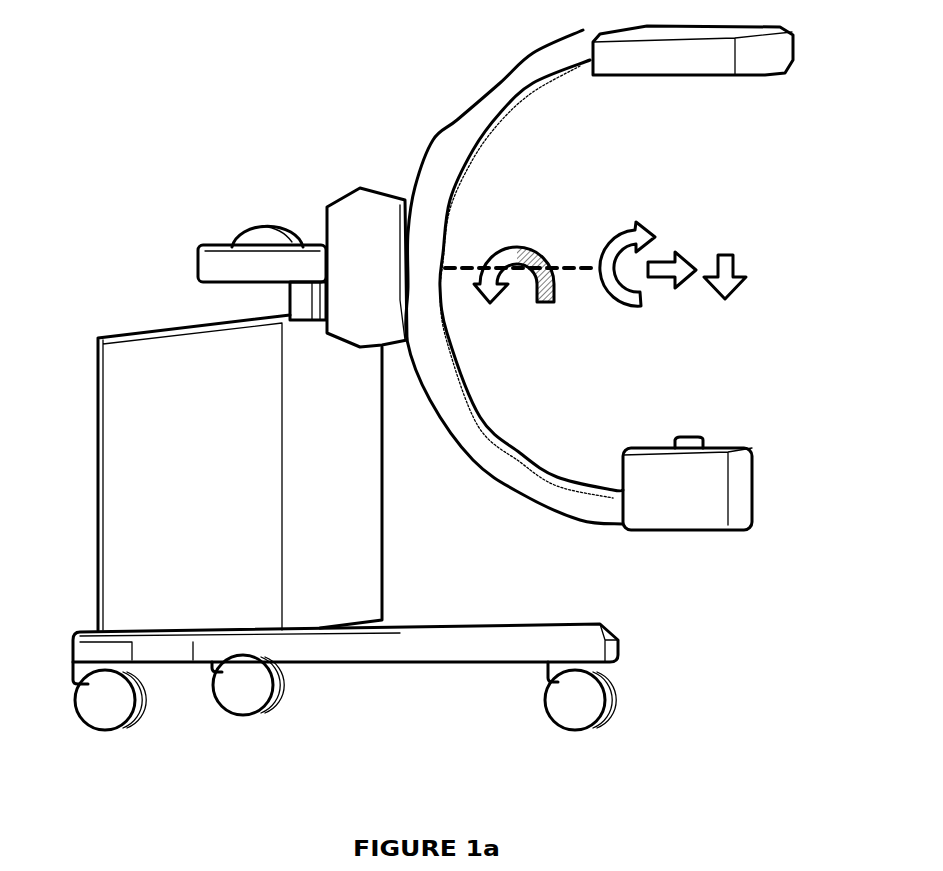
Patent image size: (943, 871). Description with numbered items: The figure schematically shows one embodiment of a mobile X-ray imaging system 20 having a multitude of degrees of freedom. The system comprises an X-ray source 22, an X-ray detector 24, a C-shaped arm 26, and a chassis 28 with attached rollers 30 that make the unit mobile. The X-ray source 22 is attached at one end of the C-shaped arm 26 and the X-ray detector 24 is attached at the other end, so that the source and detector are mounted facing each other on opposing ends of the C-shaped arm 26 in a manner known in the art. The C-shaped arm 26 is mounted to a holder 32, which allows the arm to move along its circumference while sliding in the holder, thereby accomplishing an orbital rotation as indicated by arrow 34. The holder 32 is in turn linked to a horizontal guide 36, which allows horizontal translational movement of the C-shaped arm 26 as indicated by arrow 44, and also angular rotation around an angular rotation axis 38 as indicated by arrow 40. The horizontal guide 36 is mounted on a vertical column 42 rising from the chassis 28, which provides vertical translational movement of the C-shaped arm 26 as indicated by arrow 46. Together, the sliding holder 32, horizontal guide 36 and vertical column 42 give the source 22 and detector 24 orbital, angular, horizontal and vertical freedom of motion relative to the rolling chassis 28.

The mobile X-ray imaging system 20 is at (176, 151).
The X-ray source 22 is at (688, 479).
The X-ray detector 24 is at (678, 57).
The C-shaped arm 26 is at (467, 118).
The chassis 28 is at (115, 484).
The rollers 30 is at (573, 702).
The holder 32 is at (372, 208).
The arrow 34 is at (637, 230).
The horizontal guide 36 is at (253, 262).
The angular rotation axis 38 is at (571, 272).
The arrow 40 is at (500, 263).
The vertical column 42 is at (300, 307).
The arrow 44 is at (690, 266).
The arrow 46 is at (724, 273).